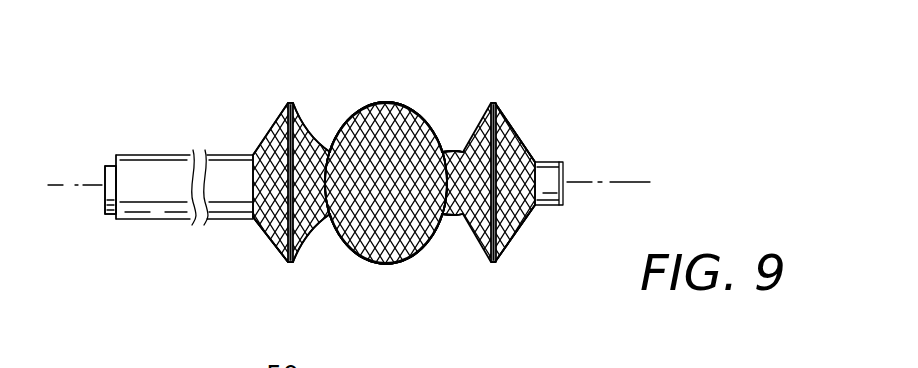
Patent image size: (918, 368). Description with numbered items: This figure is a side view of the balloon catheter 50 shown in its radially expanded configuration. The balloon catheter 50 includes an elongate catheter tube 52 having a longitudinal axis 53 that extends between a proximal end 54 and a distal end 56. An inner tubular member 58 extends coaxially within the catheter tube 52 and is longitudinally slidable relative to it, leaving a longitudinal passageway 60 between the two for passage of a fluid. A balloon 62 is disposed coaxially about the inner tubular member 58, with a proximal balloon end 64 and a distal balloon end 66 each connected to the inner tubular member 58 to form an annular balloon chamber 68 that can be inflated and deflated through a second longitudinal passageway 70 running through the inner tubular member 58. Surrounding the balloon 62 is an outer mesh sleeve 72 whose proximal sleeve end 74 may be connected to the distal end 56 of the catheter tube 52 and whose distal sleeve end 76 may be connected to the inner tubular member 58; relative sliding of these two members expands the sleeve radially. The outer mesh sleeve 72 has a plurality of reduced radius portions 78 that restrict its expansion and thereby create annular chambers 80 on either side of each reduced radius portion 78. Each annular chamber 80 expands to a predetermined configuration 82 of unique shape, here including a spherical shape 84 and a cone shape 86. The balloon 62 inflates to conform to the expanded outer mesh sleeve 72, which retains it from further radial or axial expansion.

The balloon catheter 50 is at (273, 85).
The catheter tube 52 is at (153, 220).
The longitudinal axis 53 is at (67, 186).
The proximal end 54 is at (256, 222).
The distal end 56 is at (533, 222).
The inner tubular member 58 is at (112, 217).
The longitudinal passageway 60 is at (113, 165).
The balloon 62 is at (407, 255).
The proximal balloon end 64 is at (262, 152).
The distal balloon end 66 is at (521, 152).
The annular balloon chamber 68 is at (444, 218).
The second longitudinal passageway 70 is at (105, 213).
The outer mesh sleeve 72 is at (407, 102).
The proximal sleeve end 74 is at (271, 228).
The distal sleeve end 76 is at (531, 158).
The reduced radius portion 78 is at (323, 152).
The annular chamber 80 is at (445, 223).
The predetermined configuration 82 is at (424, 250).
The spherical shape 84 is at (380, 263).
The cone shape 86 is at (310, 252).